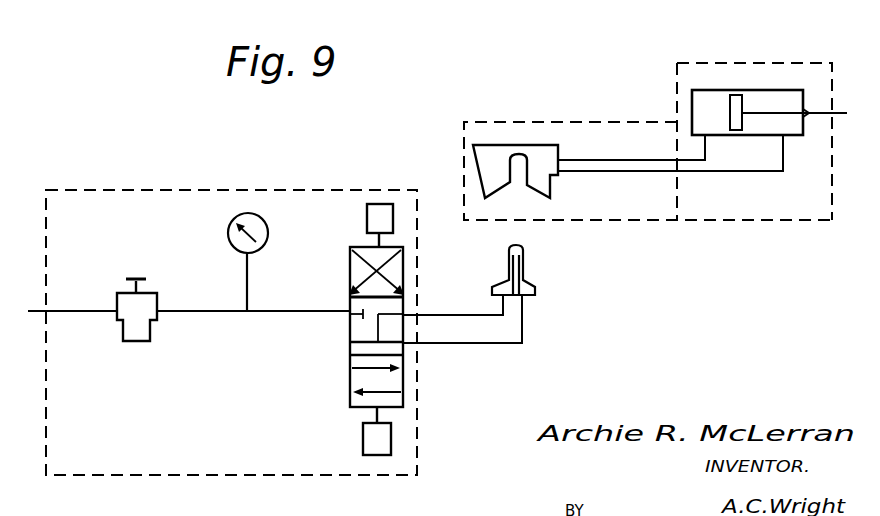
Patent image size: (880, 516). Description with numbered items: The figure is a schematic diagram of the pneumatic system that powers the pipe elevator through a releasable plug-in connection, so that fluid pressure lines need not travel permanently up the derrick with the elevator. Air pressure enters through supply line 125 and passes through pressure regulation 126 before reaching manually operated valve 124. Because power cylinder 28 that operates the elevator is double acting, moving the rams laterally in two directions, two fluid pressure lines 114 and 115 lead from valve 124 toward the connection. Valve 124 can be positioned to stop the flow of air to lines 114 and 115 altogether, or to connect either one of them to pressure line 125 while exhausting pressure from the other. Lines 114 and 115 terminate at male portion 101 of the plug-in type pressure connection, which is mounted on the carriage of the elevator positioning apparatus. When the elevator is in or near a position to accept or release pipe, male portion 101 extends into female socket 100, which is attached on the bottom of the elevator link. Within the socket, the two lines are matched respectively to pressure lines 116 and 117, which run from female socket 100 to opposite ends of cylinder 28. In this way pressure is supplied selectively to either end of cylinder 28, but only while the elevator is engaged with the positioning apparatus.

The power cylinder 28 is at (718, 90).
The female socket 100 is at (500, 201).
The male portion 101 is at (540, 273).
The fluid pressure line 114 is at (445, 313).
The fluid pressure line 115 is at (443, 345).
The pressure line 116 is at (643, 157).
The pressure line 117 is at (612, 173).
The manually operated valve 124 is at (334, 395).
The supply line 125 is at (268, 315).
The pressure regulation 126 is at (136, 345).